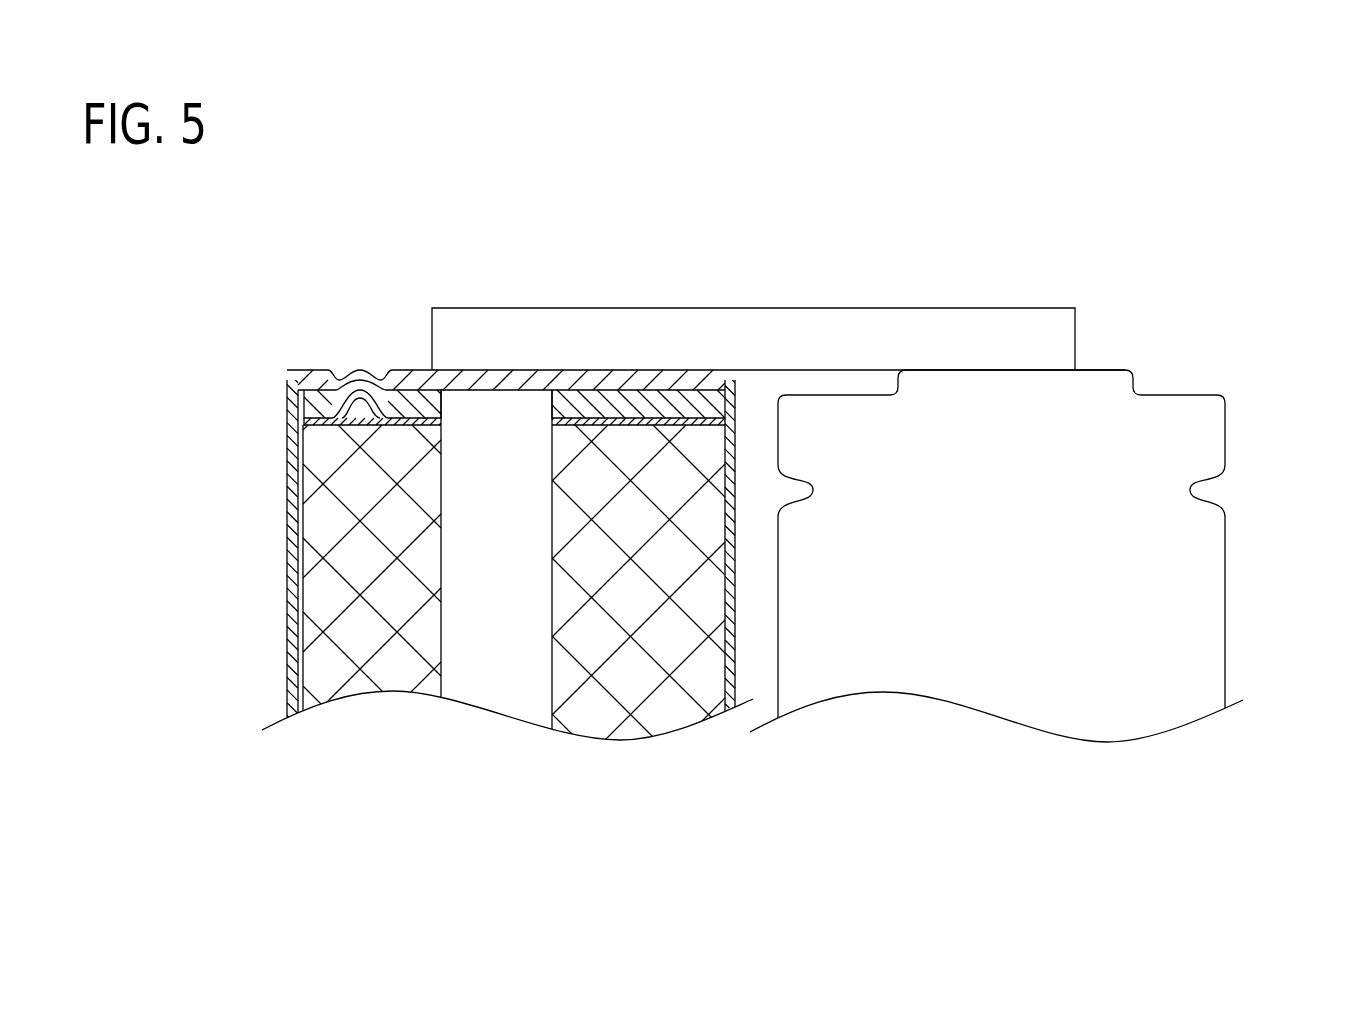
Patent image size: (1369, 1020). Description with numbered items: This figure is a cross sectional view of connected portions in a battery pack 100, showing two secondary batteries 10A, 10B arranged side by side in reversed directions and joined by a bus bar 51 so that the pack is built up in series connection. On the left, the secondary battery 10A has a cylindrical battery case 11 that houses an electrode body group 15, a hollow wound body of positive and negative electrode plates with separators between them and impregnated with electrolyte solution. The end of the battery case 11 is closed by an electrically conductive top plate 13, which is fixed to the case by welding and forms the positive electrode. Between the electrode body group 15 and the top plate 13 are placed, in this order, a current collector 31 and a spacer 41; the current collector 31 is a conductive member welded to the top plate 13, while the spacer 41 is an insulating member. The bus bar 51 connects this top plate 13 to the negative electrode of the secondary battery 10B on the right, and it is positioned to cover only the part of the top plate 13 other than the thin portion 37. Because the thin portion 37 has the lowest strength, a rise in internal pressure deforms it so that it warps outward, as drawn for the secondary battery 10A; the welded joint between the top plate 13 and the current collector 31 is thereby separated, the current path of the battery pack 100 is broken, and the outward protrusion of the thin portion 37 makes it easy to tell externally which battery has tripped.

The battery pack 100 is at (883, 268).
The secondary battery 10A is at (272, 596).
The secondary battery 10B is at (1235, 597).
The battery case 11 is at (293, 553).
The top plate 13 is at (312, 378).
The electrode body group 15 is at (318, 512).
The current collector 31 is at (327, 419).
The thin portion 37 is at (360, 372).
The spacer 41 is at (307, 402).
The bus bar 51 is at (598, 322).